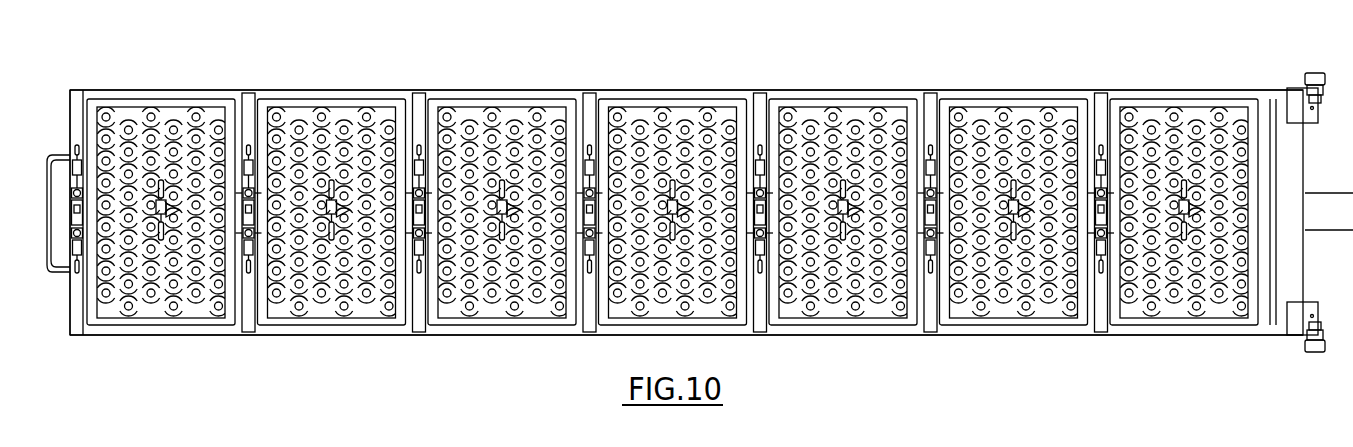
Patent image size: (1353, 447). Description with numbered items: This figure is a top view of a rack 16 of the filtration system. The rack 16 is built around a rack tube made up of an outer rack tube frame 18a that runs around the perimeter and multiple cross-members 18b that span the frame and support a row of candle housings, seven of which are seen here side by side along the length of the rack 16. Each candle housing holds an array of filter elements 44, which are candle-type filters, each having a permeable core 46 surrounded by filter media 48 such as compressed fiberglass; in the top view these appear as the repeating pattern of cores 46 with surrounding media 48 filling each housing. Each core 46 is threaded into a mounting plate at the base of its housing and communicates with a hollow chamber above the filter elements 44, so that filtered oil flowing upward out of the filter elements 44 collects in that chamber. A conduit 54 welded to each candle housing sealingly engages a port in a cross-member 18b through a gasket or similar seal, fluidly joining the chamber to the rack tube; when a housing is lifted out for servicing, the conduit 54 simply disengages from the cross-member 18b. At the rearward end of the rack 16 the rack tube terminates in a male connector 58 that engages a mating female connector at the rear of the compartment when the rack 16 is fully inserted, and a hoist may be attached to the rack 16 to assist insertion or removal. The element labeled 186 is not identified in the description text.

The rack 16 is at (99, 70).
The outer rack tube frame 18a is at (165, 90).
The cross-members 18b is at (77, 117).
The connector bar 186 is at (418, 118).
The conduit 54 is at (60, 158).
The filter elements 44 is at (110, 300).
The filter media 48 is at (153, 300).
The permeable core 46 is at (182, 295).
The male connector 58 is at (1352, 238).